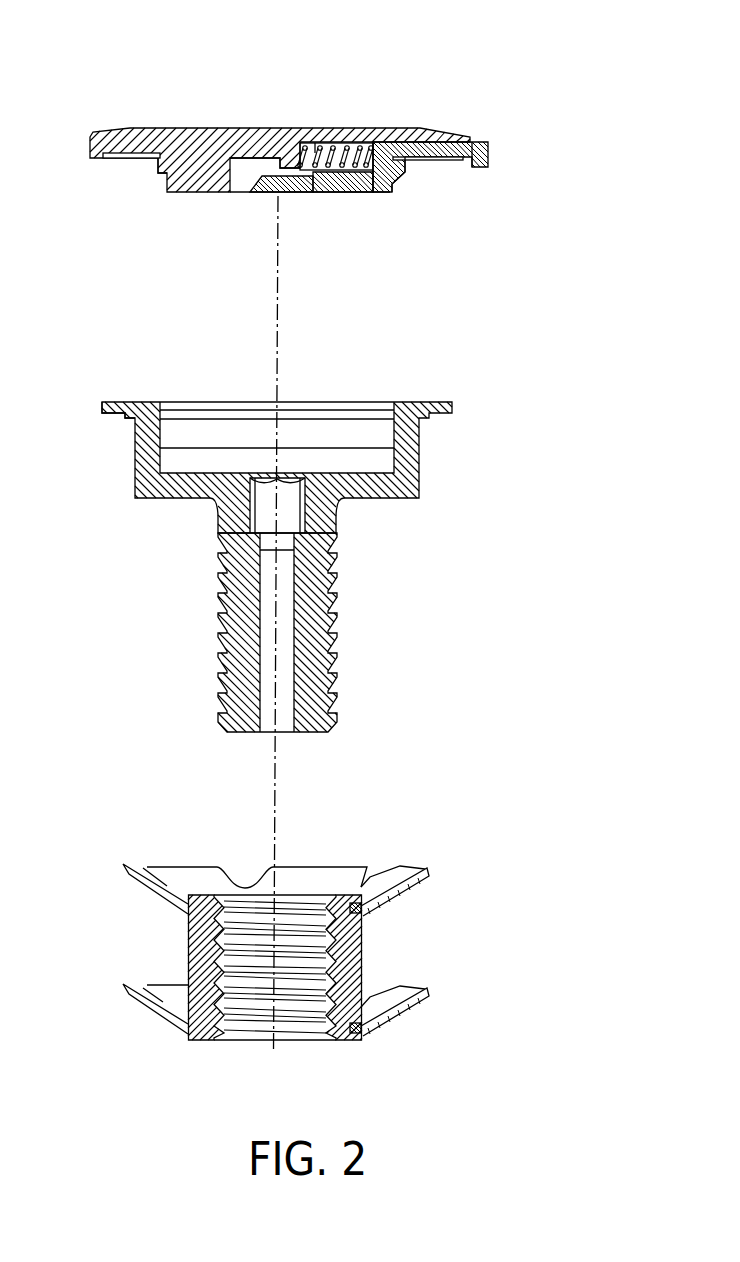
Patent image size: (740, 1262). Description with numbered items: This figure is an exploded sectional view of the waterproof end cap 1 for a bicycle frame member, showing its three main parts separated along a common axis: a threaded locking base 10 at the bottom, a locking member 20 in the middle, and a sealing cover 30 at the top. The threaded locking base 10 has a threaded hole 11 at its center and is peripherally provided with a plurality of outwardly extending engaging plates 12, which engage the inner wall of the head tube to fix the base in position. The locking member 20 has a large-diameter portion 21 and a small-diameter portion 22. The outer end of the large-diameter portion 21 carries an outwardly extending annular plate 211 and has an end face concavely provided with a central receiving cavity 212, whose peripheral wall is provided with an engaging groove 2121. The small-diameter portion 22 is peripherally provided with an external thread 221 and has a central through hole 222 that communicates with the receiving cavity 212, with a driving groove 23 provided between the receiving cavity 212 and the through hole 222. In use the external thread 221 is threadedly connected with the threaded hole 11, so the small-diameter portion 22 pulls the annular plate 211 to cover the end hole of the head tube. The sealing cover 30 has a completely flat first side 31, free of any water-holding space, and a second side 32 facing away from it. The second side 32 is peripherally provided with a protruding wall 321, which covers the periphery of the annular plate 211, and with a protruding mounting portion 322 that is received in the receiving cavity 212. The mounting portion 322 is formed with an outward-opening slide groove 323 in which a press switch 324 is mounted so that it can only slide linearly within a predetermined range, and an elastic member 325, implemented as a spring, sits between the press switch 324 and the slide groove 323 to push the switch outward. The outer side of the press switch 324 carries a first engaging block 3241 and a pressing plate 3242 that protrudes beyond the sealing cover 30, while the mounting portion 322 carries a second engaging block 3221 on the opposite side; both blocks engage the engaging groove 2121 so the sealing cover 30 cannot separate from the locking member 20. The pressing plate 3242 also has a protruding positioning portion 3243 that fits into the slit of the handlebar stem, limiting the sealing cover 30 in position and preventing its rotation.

The end cap 1 is at (550, 80).
The threaded locking base 10 is at (422, 856).
The threaded hole 11 is at (310, 895).
The engaging plates 12 is at (407, 987).
The locking member 20 is at (432, 392).
The large-diameter portion 21 is at (275, 433).
The annular plate 211 is at (128, 401).
The receiving cavity 212 is at (383, 453).
The engaging groove 2121 is at (193, 413).
The small-diameter portion 22 is at (287, 653).
The external thread 221 is at (337, 608).
The through hole 222 is at (283, 713).
The driving groove 23 is at (268, 512).
The sealing cover 30 is at (383, 122).
The first side 31 is at (347, 129).
The second side 32 is at (471, 152).
The wall 321 is at (90, 161).
The mounting portion 322 is at (198, 193).
The second engaging block 3221 is at (160, 164).
The slide groove 323 is at (247, 182).
The press switch 324 is at (377, 193).
The first engaging block 3241 is at (412, 172).
The pressing plate 3242 is at (483, 142).
The protruding positioning portion 3243 is at (478, 168).
The elastic member 325 is at (313, 193).